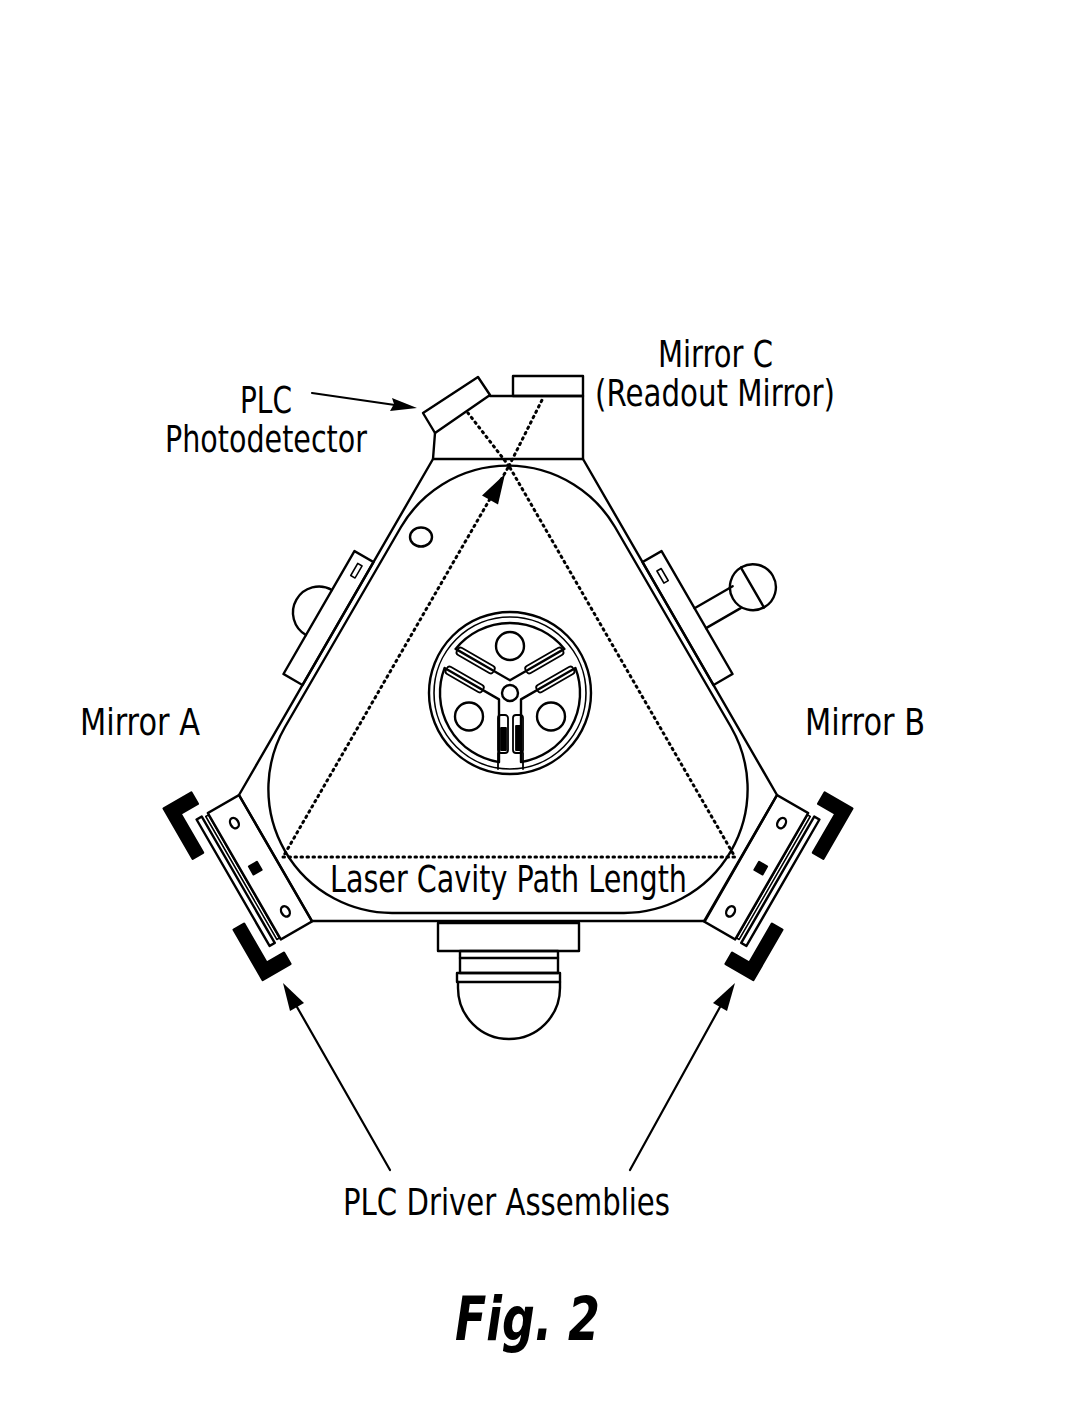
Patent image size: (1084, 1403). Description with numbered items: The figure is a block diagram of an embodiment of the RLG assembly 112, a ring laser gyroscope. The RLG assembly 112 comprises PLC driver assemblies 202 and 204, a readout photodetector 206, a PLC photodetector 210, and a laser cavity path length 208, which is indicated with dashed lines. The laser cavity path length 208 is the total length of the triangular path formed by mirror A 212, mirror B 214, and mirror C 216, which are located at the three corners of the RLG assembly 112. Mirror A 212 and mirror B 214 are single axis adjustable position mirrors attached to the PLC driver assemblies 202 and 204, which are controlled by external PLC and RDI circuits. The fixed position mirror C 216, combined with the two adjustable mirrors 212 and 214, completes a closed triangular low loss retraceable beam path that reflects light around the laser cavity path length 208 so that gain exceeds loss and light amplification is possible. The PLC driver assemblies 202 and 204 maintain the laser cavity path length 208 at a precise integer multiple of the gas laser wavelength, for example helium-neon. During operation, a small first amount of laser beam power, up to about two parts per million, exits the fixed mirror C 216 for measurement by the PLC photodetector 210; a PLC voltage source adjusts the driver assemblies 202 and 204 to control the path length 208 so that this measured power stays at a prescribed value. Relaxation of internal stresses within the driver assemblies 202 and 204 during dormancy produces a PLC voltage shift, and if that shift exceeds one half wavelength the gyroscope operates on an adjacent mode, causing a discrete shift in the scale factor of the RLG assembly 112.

The RLG assembly 112 is at (575, 100).
The PLC driver assembly 202 is at (216, 899).
The PLC driver assembly 204 is at (795, 898).
The readout photodetector 206 is at (541, 376).
The laser cavity path length 208 is at (430, 857).
The PLC photodetector 210 is at (445, 394).
The mirror A 212 is at (238, 792).
The mirror B 214 is at (779, 792).
The mirror C 216 is at (583, 459).